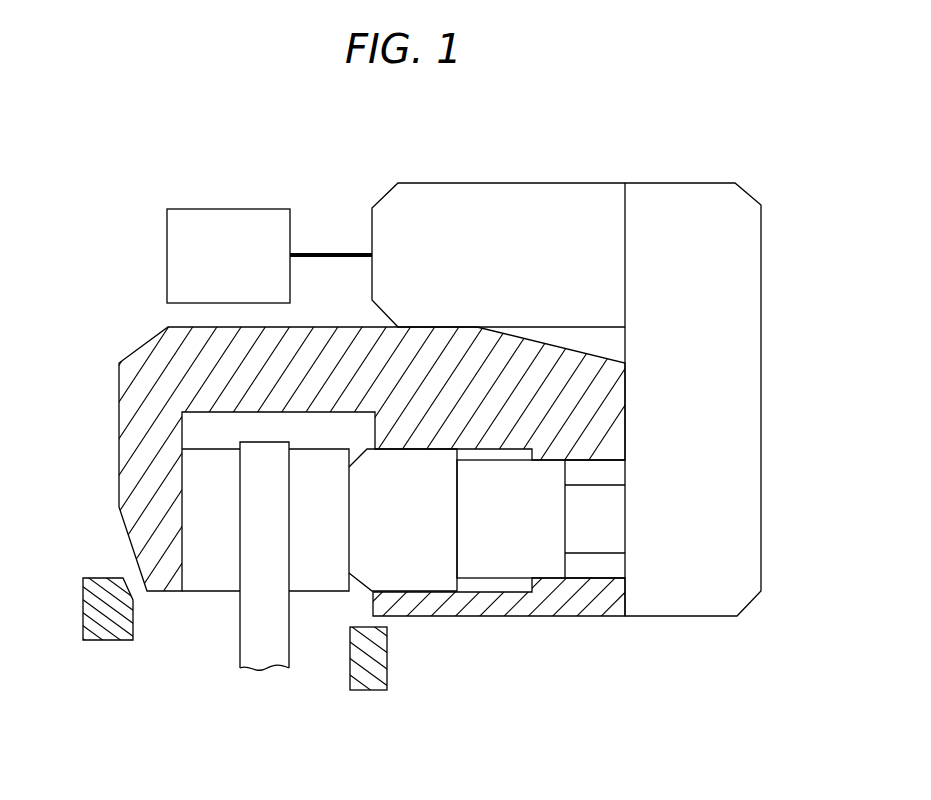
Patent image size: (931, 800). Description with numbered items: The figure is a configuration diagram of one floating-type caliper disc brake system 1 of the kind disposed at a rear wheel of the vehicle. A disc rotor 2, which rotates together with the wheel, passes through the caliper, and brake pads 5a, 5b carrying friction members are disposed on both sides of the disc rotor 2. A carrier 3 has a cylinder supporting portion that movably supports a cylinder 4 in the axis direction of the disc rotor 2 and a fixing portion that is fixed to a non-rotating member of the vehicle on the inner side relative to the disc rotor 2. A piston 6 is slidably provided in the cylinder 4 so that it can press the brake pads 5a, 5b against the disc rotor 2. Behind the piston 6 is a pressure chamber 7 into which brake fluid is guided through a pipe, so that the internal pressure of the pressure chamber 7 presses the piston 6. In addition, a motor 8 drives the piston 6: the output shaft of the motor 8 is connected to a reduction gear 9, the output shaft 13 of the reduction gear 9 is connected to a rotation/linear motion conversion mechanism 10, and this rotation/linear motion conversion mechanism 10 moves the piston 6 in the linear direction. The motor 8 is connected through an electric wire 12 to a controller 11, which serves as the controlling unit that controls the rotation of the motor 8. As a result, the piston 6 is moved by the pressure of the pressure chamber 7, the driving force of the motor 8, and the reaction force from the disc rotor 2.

The disc brake system 1 is at (768, 163).
The disc rotor 2 is at (264, 667).
The carrier 3 is at (88, 609).
The cylinder 4 is at (122, 414).
The brake pad 5a is at (206, 581).
The brake pad 5b is at (314, 581).
The piston 6 is at (411, 580).
The pressure chamber 7 is at (490, 587).
The motor 8 is at (512, 188).
The reduction gear 9 is at (750, 408).
The rotation/linear motion conversion mechanism 10 is at (544, 565).
The controller 11 is at (227, 212).
The electric wire 12 is at (331, 252).
The output shaft 13 is at (592, 542).